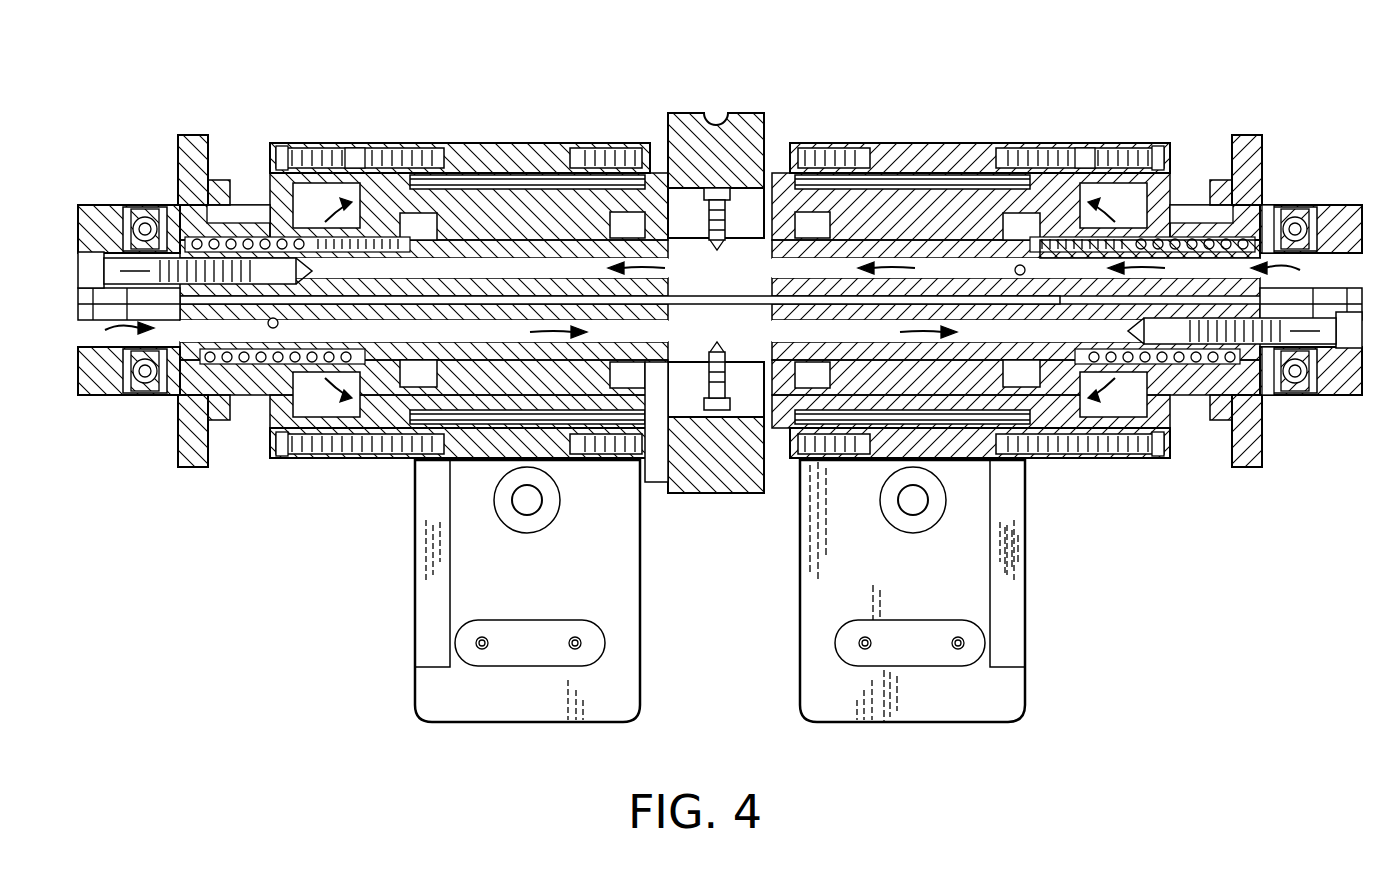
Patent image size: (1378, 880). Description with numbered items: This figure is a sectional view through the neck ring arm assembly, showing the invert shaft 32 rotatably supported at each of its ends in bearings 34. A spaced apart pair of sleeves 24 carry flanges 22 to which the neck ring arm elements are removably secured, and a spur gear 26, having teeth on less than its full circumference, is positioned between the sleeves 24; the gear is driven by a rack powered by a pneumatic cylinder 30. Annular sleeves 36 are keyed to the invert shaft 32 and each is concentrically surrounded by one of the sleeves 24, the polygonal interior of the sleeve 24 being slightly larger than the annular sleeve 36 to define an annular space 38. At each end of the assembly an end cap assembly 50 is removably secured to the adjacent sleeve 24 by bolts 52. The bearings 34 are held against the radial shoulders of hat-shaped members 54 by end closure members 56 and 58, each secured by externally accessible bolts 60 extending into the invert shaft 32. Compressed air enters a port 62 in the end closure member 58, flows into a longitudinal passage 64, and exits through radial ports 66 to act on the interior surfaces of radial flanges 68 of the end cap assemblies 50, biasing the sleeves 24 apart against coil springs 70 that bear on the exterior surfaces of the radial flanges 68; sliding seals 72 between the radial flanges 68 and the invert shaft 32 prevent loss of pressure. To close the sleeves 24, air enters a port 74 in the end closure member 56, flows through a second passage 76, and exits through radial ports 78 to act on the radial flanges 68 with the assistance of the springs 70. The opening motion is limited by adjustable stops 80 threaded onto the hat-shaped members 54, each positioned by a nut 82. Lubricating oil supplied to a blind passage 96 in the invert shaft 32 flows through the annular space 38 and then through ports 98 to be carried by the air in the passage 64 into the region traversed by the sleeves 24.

The flanges 22 is at (645, 650).
The sleeves 24 is at (450, 146).
The spur gear 26 is at (738, 112).
The pneumatic cylinder 30 is at (545, 185).
The invert shaft 32 is at (770, 370).
The bearings 34 is at (142, 205).
The annular sleeves 36 is at (635, 210).
The annular space 38 is at (958, 180).
The end cap assembly 50 is at (360, 148).
The bolts 52 is at (300, 146).
The hat-shaped members 54 is at (178, 168).
The end closure member 56 is at (60, 212).
The end closure member 58 is at (1350, 260).
The bolts 60 is at (78, 285).
The port 62 is at (1292, 238).
The longitudinal passage 64 is at (1180, 270).
The radial ports 66 is at (418, 200).
The radial flanges 68 is at (380, 175).
The coil springs 70 is at (238, 355).
The sliding seals 72 is at (385, 395).
The port 74 is at (105, 325).
The second longitudinally extending passage 76 is at (650, 365).
The radial ports 78 is at (272, 340).
The adjustable stops 80 is at (198, 140).
The nut 82 is at (226, 185).
The blind passage 96 is at (725, 355).
The ports 98 is at (426, 285).